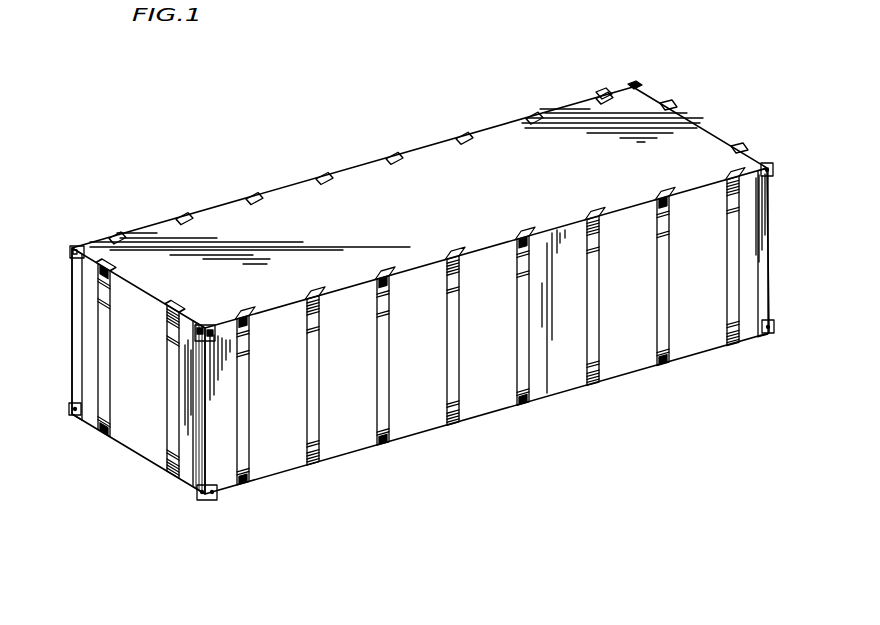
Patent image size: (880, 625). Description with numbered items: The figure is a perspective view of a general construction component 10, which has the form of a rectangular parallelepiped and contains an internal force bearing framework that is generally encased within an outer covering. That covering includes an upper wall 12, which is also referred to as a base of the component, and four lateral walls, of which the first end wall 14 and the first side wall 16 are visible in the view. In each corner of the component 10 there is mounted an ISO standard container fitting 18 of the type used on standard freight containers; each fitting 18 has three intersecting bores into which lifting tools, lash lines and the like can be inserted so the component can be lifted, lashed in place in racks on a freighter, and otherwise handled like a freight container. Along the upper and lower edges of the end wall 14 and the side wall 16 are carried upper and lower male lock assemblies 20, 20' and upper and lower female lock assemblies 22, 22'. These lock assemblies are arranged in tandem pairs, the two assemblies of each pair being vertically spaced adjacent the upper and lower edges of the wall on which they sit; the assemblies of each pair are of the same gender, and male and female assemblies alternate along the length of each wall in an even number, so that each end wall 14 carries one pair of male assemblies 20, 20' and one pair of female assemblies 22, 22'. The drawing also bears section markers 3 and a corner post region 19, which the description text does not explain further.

The general construction component 10 is at (432, 77).
The upper wall 12 is at (292, 190).
The first end wall 14 is at (695, 122).
The first side wall 16 is at (504, 112).
The ISO standard container fitting 18 is at (72, 246).
The corner post 19 is at (190, 345).
The upper male lock assembly 20 is at (398, 290).
The lower male lock assembly 20' is at (361, 449).
The upper female lock assembly 22 is at (422, 263).
The lower female lock assembly 22' is at (433, 423).
The section line for FIG. 3 is at (156, 177).